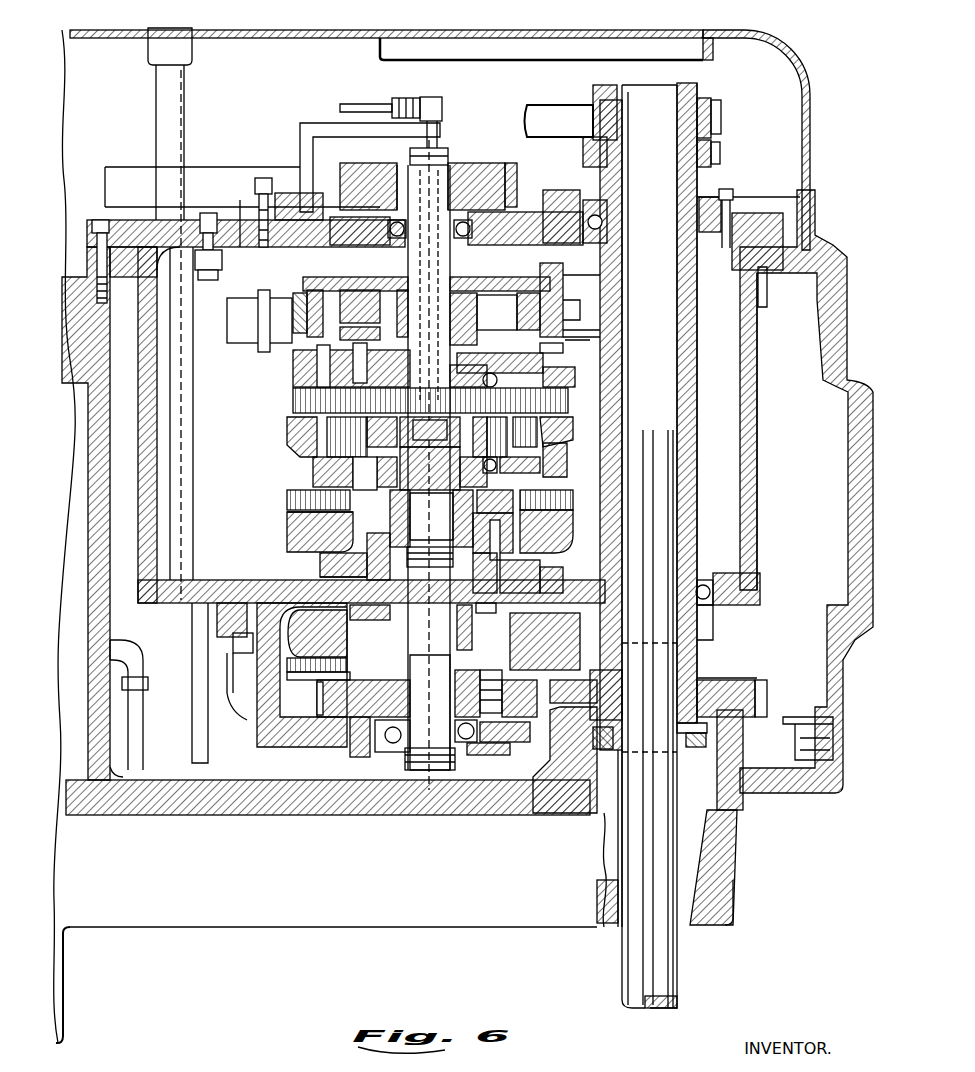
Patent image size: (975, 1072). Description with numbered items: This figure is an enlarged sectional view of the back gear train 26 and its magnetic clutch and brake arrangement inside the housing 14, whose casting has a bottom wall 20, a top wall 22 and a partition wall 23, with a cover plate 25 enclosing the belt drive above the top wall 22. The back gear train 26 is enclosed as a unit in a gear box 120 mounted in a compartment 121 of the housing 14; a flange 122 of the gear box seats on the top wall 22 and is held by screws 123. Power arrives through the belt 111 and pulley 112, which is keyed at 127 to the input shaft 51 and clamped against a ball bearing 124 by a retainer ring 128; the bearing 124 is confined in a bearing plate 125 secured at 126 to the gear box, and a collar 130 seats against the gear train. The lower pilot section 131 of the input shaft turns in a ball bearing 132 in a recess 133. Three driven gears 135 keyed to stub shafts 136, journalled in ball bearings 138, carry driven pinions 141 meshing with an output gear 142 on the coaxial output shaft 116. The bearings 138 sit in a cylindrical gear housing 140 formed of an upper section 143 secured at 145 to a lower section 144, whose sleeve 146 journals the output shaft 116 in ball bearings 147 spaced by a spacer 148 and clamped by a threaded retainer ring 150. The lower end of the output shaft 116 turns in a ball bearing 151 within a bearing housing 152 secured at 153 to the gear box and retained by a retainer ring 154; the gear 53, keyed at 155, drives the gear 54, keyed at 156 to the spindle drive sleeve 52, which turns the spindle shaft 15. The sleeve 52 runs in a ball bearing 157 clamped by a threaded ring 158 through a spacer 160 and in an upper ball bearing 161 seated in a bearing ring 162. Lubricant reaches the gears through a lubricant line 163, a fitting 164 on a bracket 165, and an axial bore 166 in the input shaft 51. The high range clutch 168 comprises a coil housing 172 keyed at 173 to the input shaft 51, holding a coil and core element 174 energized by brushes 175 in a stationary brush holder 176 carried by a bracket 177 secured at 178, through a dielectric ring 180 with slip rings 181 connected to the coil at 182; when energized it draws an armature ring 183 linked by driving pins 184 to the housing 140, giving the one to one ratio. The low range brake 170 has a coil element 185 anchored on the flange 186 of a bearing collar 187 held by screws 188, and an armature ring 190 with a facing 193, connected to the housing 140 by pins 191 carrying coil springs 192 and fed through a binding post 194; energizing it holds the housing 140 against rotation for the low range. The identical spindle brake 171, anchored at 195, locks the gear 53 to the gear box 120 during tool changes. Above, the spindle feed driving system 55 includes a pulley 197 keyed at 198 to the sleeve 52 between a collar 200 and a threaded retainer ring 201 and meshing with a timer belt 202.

The housing 14 is at (839, 255).
The spindle drive shaft 15 is at (664, 976).
The bottom wall 20 is at (84, 818).
The top wall 22 is at (88, 240).
The partition wall 23 is at (80, 588).
The cover plate 25 is at (796, 62).
The back gear train 26 is at (572, 286).
The input shaft 51 is at (448, 166).
The spindle drive sleeve 52 is at (692, 340).
The gear 53 is at (340, 745).
The spindle drive sleeve gear 54 is at (766, 688).
The spindle feed driving system 55 is at (584, 104).
The belt 111 is at (127, 178).
The input pulley 112 is at (487, 163).
The output shaft 116 is at (408, 604).
The gear box 120 is at (762, 394).
The compartment 121 is at (160, 783).
The flange 122 is at (100, 216).
The screws 123 is at (112, 226).
The ball bearing 124 is at (458, 246).
The bearing plate 125 is at (246, 202).
The bearing plate fastening 126 is at (262, 182).
The key 127 is at (400, 173).
The retainer ring 128 is at (446, 148).
The collar 130 is at (490, 274).
The pilot section 131 is at (412, 476).
The ball bearing 132 is at (327, 430).
The recess 133 is at (318, 458).
The driven gears 135 is at (575, 390).
The stub shafts 136 is at (525, 360).
The ball bearings 138 is at (578, 364).
The gear housing 140 is at (562, 418).
The driven pinion 141 is at (300, 445).
The output gear 142 is at (488, 498).
The upper section 143 is at (596, 346).
The lower section 144 is at (287, 418).
The housing section fastening 145 is at (583, 378).
The sleeve 146 is at (455, 503).
The ball bearings 147 is at (480, 540).
The spacer 148 is at (456, 523).
The threaded retainer ring 150 is at (398, 580).
The ball bearing 151 is at (468, 768).
The bearing housing 152 is at (290, 738).
The bearing housing fastening 153 is at (235, 642).
The retainer ring 154 is at (376, 766).
The key 155 is at (446, 688).
The key 156 is at (616, 756).
The ball bearing 157 is at (710, 605).
The threaded ring 158 is at (697, 752).
The spacer 160 is at (708, 666).
The ball bearing 161 is at (708, 200).
The bearing ring 162 is at (732, 206).
The lubricant line 163 is at (345, 104).
The fitting 164 is at (402, 97).
The bracket 165 is at (305, 133).
The axial bore 166 is at (518, 188).
The high range clutch 168 is at (565, 276).
The low range brake 170 is at (300, 536).
The spindle brake 171 is at (290, 646).
The coil housing 172 is at (304, 288).
The key 173 is at (374, 286).
The coil and core element 174 is at (348, 288).
The brushes 175 is at (262, 316).
The brush holder 176 is at (228, 328).
The bracket 177 is at (188, 284).
The bracket fastening 178 is at (208, 222).
The ring 180 is at (562, 290).
The slip rings 181 is at (563, 310).
The circuit connection 182 is at (545, 343).
The armature ring 183 is at (322, 283).
The driving pins 184 is at (320, 352).
The coil element 185 is at (287, 532).
The flange 186 is at (320, 572).
The bearing collar 187 is at (388, 610).
The screws 188 is at (323, 554).
The armature ring 190 is at (287, 497).
The pins 191 is at (352, 468).
The coil springs 192 is at (300, 521).
The facing 193 is at (290, 510).
The binding post 194 is at (660, 554).
The anchoring 195 is at (478, 626).
The pulley 197 is at (712, 104).
The key 198 is at (618, 128).
The collar 200 is at (716, 150).
The threaded retainer ring 201 is at (607, 96).
The timer belt 202 is at (552, 112).